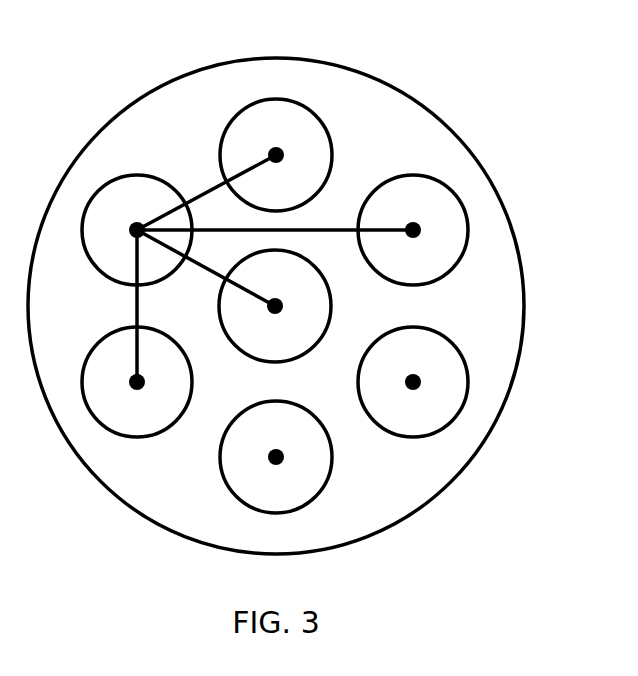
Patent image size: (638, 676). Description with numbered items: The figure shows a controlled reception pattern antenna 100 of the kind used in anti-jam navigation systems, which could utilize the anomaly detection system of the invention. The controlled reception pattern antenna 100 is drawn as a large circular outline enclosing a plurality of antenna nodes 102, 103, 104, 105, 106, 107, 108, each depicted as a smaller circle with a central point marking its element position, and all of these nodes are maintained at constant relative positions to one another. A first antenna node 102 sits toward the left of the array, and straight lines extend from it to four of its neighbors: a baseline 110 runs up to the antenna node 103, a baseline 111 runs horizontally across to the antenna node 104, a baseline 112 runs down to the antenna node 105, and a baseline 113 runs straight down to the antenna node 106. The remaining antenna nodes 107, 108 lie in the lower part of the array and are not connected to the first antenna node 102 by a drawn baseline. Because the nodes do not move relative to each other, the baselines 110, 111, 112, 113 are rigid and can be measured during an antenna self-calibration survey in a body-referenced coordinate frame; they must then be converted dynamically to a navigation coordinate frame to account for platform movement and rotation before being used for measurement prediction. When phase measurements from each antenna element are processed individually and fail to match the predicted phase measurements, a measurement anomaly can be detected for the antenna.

The controlled reception pattern antenna 100 is at (276, 306).
The first antenna node 102 is at (137, 230).
The antenna node 103 is at (276, 155).
The antenna node 104 is at (413, 230).
The antenna node 105 is at (275, 306).
The antenna node 106 is at (137, 382).
The antenna node 107 is at (413, 382).
The antenna node 108 is at (276, 457).
The baseline 110 is at (210, 188).
The baseline 111 is at (278, 230).
The baseline 112 is at (220, 277).
The baseline 113 is at (137, 313).